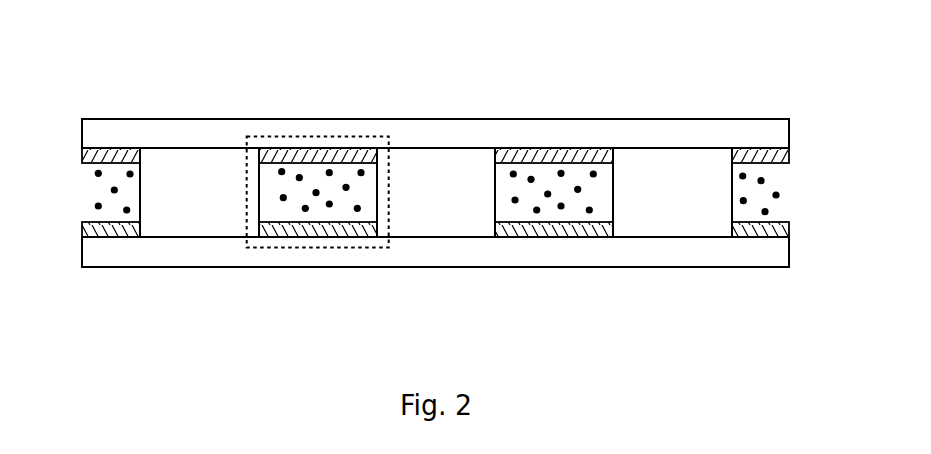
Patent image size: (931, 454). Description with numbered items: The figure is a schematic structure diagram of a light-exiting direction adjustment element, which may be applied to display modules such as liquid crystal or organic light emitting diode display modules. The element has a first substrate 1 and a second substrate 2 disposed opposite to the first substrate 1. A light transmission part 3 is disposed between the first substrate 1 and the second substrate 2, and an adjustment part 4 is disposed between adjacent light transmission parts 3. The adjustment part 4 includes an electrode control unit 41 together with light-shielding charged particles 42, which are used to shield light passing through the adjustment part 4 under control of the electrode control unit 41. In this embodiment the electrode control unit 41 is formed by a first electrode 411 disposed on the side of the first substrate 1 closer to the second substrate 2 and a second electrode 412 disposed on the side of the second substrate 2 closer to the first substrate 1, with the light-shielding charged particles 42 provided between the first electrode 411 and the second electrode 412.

The first substrate 1 is at (163, 253).
The second substrate 2 is at (163, 132).
The light transmission part 3 is at (217, 215).
The adjustment part 4 is at (346, 136).
The electrode control unit 41 is at (300, 123).
The first electrode 411 is at (275, 221).
The second electrode 412 is at (298, 153).
The light-shielding charged particles 42 is at (305, 208).